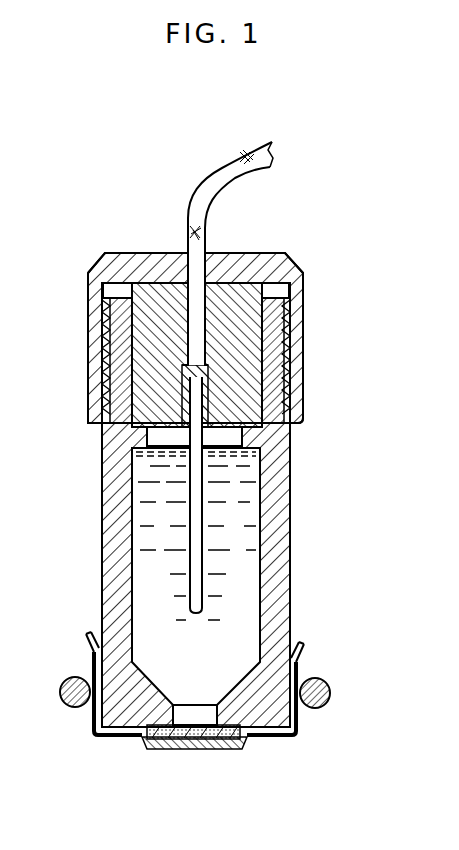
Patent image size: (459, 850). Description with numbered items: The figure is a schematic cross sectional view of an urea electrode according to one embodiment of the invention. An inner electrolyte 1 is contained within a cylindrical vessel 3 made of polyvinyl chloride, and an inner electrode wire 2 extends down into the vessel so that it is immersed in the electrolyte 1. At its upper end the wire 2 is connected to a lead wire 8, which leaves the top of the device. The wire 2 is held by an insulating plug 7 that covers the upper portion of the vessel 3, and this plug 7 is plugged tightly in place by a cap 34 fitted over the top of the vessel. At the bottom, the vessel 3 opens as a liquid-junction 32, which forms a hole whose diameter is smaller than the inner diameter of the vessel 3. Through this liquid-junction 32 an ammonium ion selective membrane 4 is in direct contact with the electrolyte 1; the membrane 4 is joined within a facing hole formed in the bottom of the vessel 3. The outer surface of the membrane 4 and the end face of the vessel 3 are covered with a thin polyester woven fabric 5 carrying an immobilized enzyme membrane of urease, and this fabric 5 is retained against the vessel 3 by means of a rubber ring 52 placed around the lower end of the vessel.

The inner electrolyte 1 is at (240, 604).
The inner electrode wire 2 is at (200, 538).
The cylindrical vessel 3 is at (100, 600).
The ammonium ion selective membrane 4 is at (223, 748).
The polyester woven fabric 5 is at (158, 749).
The insulating plug 7 is at (130, 383).
The lead wire 8 is at (203, 195).
The liquid-junction 32 is at (194, 712).
The cap 34 is at (303, 310).
The rubber ring 52 is at (331, 695).